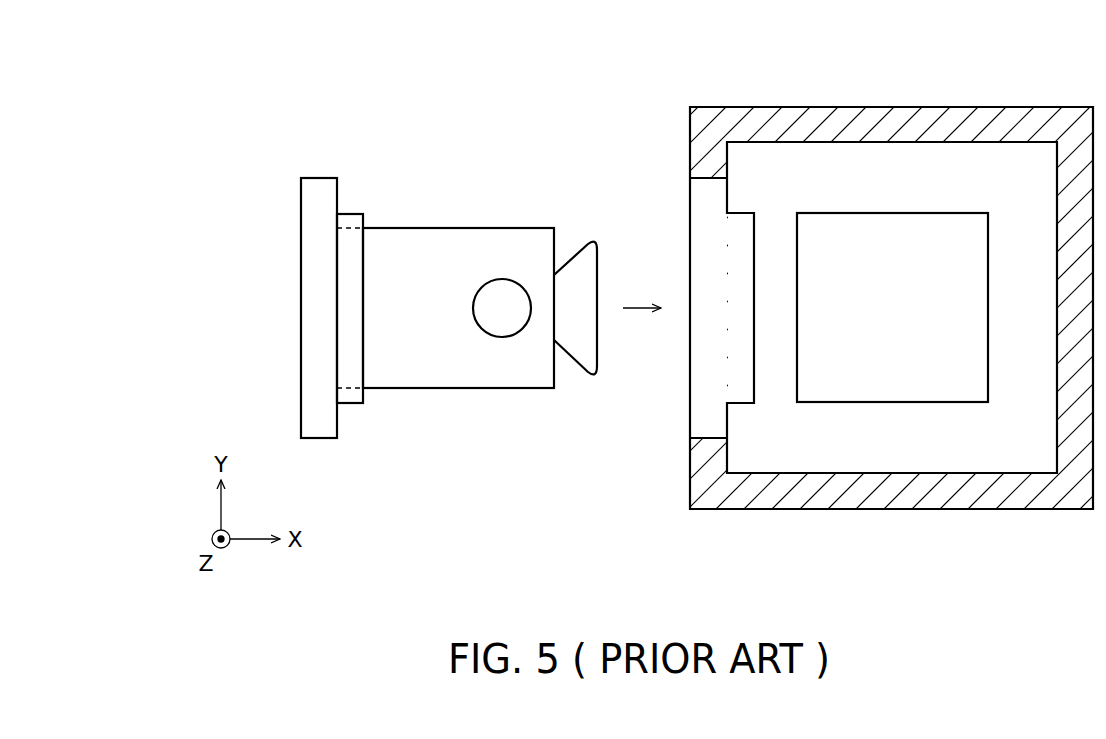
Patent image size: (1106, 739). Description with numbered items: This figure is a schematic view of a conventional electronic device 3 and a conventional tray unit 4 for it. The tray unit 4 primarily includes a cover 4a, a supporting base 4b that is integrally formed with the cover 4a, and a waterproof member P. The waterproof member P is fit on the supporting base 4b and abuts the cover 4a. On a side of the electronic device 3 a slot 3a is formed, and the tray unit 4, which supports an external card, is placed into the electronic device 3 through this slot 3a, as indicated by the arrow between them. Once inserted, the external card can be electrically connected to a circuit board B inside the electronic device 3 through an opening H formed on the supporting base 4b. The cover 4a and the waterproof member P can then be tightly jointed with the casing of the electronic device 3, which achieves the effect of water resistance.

The electronic device 3 is at (690, 285).
The slot 3a is at (707, 365).
The tray unit 4 is at (420, 275).
The cover 4a is at (310, 308).
The supporting base 4b is at (480, 278).
The waterproof member P is at (364, 365).
The opening H is at (502, 308).
The circuit board B is at (892, 307).